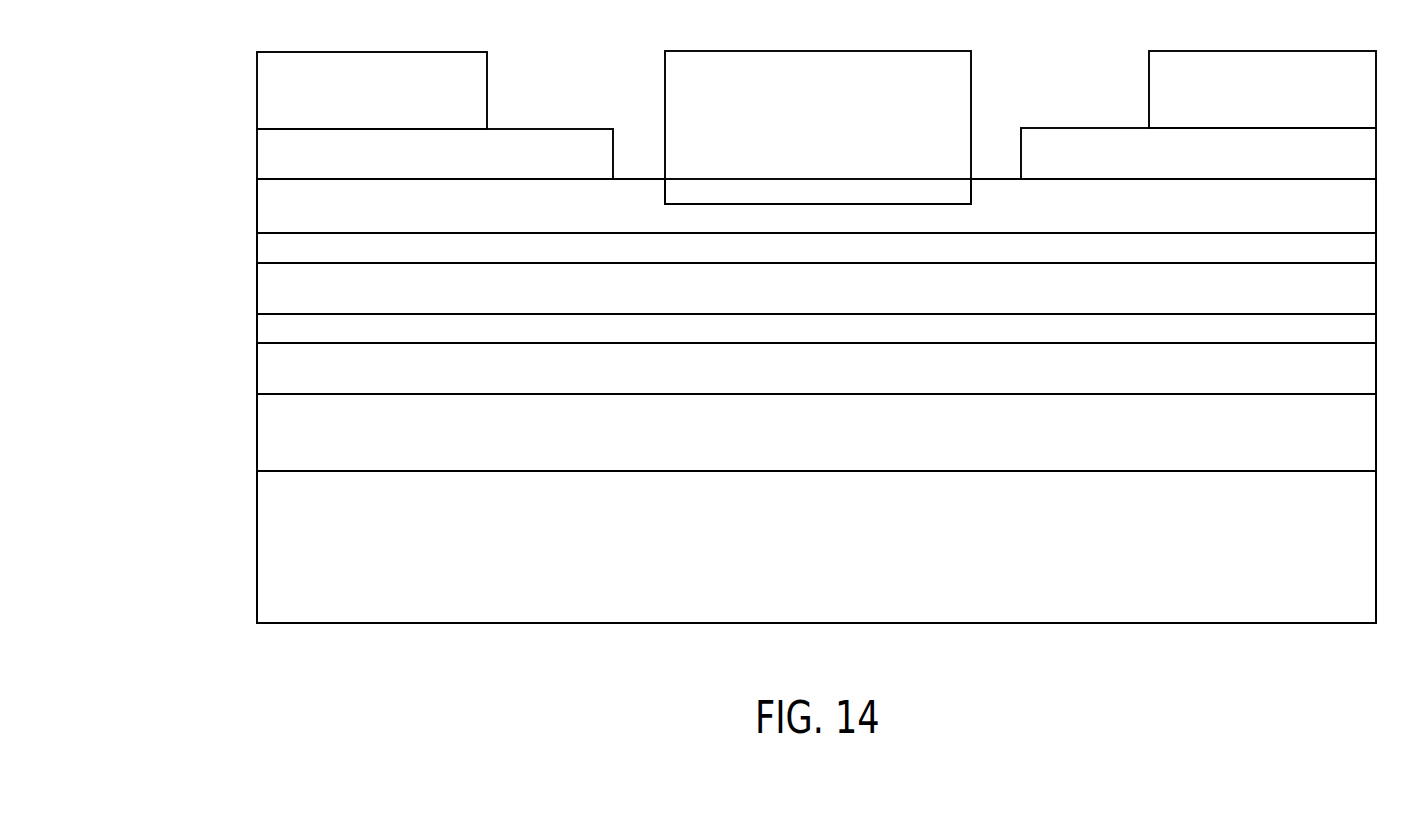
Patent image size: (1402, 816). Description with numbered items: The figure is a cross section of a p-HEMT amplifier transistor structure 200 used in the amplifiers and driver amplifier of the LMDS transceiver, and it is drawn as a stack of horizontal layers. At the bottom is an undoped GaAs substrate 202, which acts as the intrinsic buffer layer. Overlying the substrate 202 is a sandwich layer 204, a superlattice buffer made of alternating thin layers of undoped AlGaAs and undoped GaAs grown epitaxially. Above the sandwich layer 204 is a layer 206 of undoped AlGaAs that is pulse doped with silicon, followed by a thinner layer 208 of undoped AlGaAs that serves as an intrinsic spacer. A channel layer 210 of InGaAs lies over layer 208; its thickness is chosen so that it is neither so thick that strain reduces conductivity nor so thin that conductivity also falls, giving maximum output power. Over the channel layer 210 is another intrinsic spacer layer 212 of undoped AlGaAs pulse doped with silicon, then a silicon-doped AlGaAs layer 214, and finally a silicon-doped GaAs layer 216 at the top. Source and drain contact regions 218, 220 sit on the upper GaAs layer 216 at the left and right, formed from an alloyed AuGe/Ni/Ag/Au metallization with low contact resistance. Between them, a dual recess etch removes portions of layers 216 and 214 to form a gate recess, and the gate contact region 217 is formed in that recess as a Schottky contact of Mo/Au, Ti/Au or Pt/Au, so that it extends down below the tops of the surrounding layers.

The p-HEMT amplifier transistor structure 200 is at (250, 89).
The undoped GaAs substrate 202 is at (922, 566).
The sandwich layer 204 is at (838, 448).
The layer of undoped AlGaAs 206 is at (838, 384).
The intrinsic spacer layer 208 is at (838, 342).
The channel layer 210 is at (838, 304).
The intrinsic spacer layer 212 is at (838, 261).
The silicon-doped AlGaAs layer 214 is at (838, 230).
The silicon-doped GaAs layer 216 is at (445, 173).
The gate contact region 217 is at (838, 139).
The source contact region 218 is at (390, 108).
The drain contact region 220 is at (1283, 108).